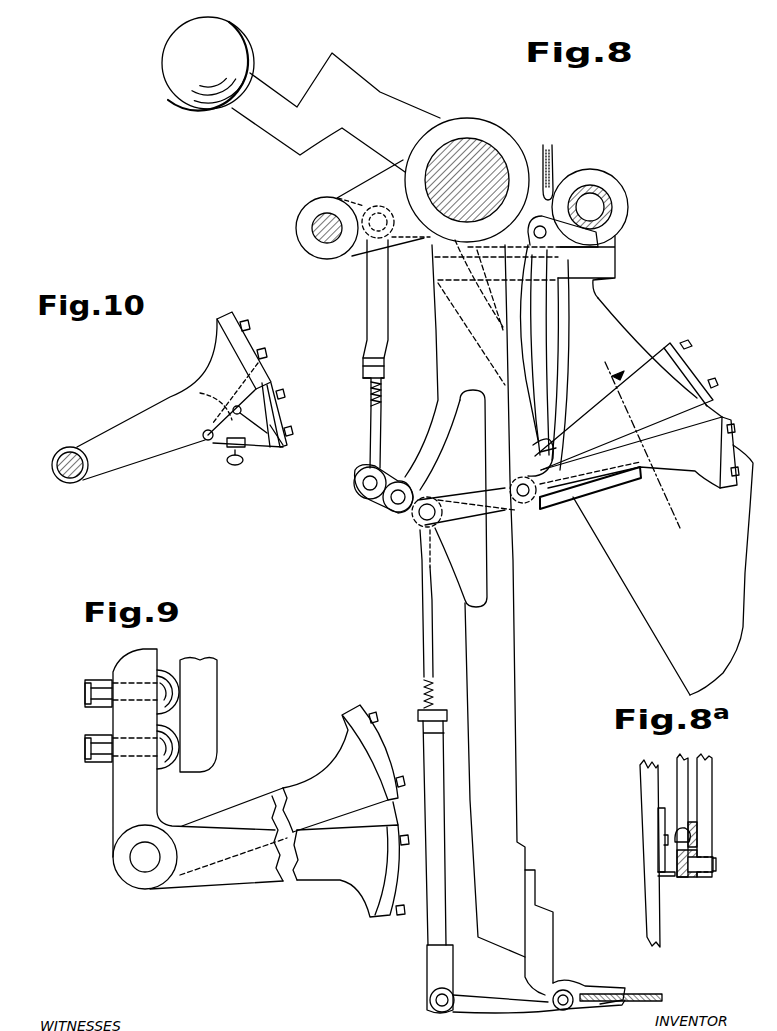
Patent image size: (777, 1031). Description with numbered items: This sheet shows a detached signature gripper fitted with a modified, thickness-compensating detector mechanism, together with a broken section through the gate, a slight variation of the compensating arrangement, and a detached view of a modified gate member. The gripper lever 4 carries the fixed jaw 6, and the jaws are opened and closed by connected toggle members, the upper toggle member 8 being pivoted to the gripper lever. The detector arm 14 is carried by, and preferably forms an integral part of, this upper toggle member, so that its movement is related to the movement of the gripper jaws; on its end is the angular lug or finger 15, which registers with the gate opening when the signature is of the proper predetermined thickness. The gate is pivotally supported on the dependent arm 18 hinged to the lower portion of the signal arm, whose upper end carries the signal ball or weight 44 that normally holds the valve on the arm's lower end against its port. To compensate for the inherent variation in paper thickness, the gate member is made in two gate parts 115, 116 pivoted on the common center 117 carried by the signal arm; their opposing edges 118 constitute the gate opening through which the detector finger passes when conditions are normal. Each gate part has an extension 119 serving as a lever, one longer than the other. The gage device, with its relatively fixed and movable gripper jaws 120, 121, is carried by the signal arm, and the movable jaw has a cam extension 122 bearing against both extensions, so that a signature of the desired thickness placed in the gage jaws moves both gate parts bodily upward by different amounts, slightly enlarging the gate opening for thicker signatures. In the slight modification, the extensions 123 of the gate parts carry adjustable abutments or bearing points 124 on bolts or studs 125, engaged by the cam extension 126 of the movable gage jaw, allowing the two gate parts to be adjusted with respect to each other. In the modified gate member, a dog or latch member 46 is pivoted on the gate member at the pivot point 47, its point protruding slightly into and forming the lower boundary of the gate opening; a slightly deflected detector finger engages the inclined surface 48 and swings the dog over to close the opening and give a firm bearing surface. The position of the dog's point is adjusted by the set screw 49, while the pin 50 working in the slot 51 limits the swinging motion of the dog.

In FIG. 8, the gripper lever 4 is at (504, 647).
In FIG. 8A, the gripper lever 4 is at (650, 897).
In FIG. 8, the fixed jaw 6 is at (680, 538).
In FIG. 8, the upper toggle member 8 is at (638, 438).
In FIG. 8, the detector arm 14 is at (613, 488).
In FIG. 8A, the detector arm 14 is at (655, 863).
In FIG. 10, the angular lug or finger 15 is at (270, 362).
In FIG. 8, the dependent arm 18 is at (563, 348).
In FIG. 8A, the dependent arm 18 is at (706, 773).
In FIG. 8, the signal ball or weight 44 is at (175, 53).
In FIG. 10, the dog or latch member 46 is at (218, 402).
In FIG. 10, the pivot point 47 is at (206, 440).
In FIG. 10, the inclined surface 48 is at (272, 381).
In FIG. 10, the set screw 49 is at (243, 462).
In FIG. 10, the pin 50 is at (285, 420).
In FIG. 10, the slot 51 is at (284, 446).
In FIG. 8, the gate part 115 is at (626, 405).
In FIG. 8A, the gate part 115 is at (698, 842).
In FIG. 9, the gate part 115 is at (344, 768).
In FIG. 8, the gate part 116 is at (640, 452).
In FIG. 8A, the gate part 116 is at (683, 878).
In FIG. 9, the gate part 116 is at (351, 871).
In FIG. 8, the common center 117 is at (523, 504).
In FIG. 8A, the common center 117 is at (716, 863).
In FIG. 8, the opposing edges 118 is at (715, 400).
In FIG. 9, the opposing edges 118 is at (395, 825).
In FIG. 8, the extension 119 is at (542, 438).
In FIG. 8A, the extension 119 is at (696, 823).
In FIG. 8, the fixed gripper jaw 120 is at (541, 165).
In FIG. 8, the movable gripper jaw 121 is at (558, 185).
In FIG. 8, the cam extension 122 is at (545, 452).
In FIG. 8A, the cam extension 122 is at (680, 840).
In FIG. 9, the extensions 123 is at (120, 780).
In FIG. 9, the adjustable abutments or bearing points 124 is at (170, 742).
In FIG. 9, the bolts or studs 125 is at (85, 687).
In FIG. 9, the cam extension 126 is at (215, 748).